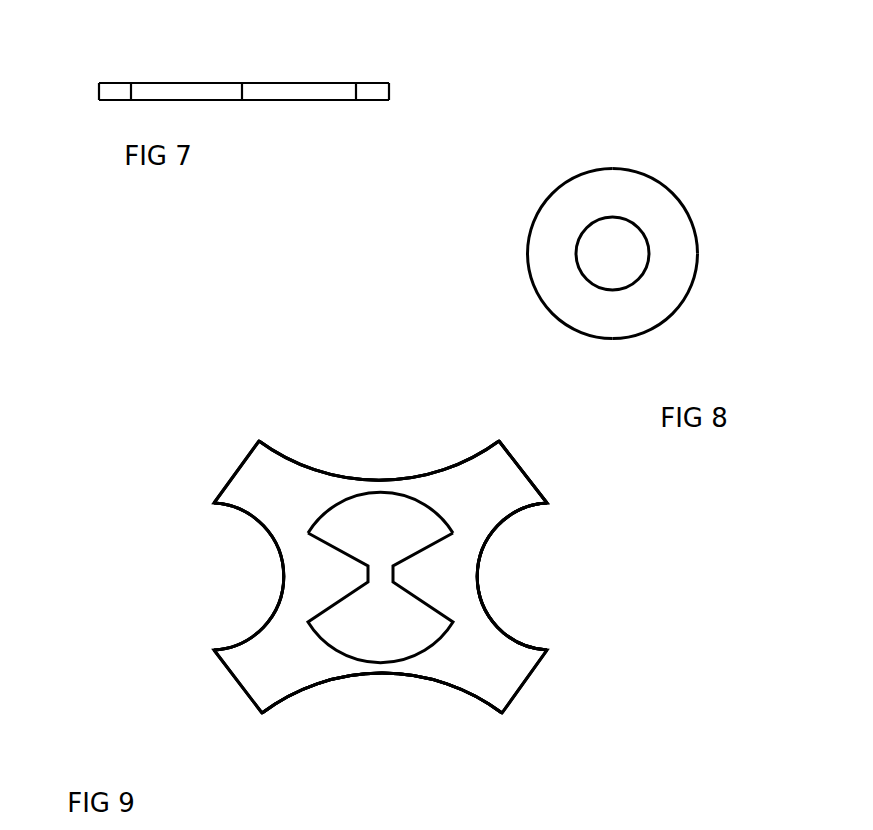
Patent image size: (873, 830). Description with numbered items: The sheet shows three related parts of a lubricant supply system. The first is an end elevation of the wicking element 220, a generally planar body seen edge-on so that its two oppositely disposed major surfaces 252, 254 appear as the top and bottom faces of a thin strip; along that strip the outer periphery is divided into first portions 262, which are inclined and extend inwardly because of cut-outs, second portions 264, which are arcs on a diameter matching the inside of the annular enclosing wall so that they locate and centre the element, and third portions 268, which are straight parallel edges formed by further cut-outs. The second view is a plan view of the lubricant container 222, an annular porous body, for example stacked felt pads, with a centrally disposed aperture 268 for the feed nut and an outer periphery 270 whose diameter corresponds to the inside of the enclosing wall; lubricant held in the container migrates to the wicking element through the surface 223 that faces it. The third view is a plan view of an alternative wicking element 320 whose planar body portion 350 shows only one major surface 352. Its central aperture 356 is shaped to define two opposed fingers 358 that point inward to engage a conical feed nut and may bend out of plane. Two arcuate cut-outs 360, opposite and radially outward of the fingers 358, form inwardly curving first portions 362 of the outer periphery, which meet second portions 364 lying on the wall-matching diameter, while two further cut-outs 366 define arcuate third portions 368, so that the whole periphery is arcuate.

In FIG. 7, the wicking element 220 is at (399, 56).
In FIG. 7, the major surface 252 is at (338, 83).
In FIG. 7, the major surface 254 is at (328, 100).
In FIG. 7, the first portion of the outer periphery 262 is at (199, 89).
In FIG. 7, the second portion of the outer periphery 264 is at (111, 92).
In FIG. 7, the third portion of the outer periphery / aperture 268 is at (100, 92).
In FIG. 8, the third portion of the outer periphery / aperture 268 is at (630, 276).
In FIG. 8, the lubricant container 222 is at (693, 202).
In FIG. 8, the surface 223 is at (642, 188).
In FIG. 8, the outer periphery 270 is at (698, 240).
In FIG. 9, the alternative wicking element 320 is at (217, 423).
In FIG. 9, the body portion 350 is at (548, 497).
In FIG. 9, the major surface 352 is at (490, 693).
In FIG. 9, the aperture 356 is at (417, 518).
In FIG. 9, the fingers 358 is at (412, 586).
In FIG. 9, the cut-outs 360 is at (228, 568).
In FIG. 9, the first portion of the outer periphery 362 is at (257, 627).
In FIG. 9, the second portion of the outer periphery 364 is at (233, 470).
In FIG. 9, the further cut-outs 366 is at (378, 453).
In FIG. 9, the third portion of the outer periphery 368 is at (311, 471).